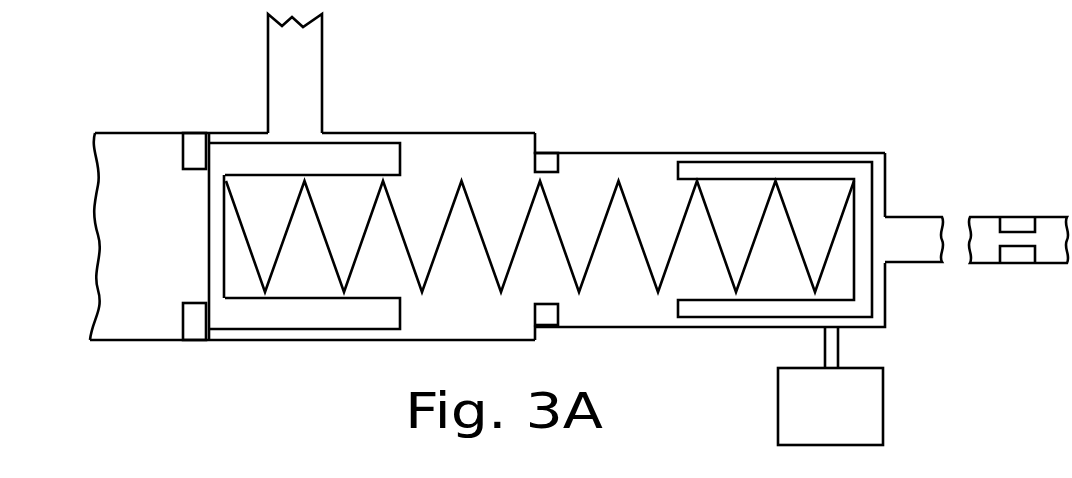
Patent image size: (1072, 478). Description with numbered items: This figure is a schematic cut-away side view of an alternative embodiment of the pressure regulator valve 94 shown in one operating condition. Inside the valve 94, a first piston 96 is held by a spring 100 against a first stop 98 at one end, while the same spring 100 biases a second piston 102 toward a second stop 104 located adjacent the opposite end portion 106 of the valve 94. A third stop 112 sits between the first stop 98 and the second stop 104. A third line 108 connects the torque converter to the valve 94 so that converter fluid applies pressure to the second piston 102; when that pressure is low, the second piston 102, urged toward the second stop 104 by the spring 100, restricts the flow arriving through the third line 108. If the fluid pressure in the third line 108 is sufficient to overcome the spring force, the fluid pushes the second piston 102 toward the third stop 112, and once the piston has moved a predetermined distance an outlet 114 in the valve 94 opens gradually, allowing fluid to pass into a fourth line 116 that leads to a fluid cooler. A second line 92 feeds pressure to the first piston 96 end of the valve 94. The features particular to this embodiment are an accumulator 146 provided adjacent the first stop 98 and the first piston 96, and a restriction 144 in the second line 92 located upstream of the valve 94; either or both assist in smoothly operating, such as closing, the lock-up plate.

The second line 92 is at (916, 225).
The pressure regulator valve 94 is at (679, 74).
The first piston 96 is at (782, 309).
The first stop 98 is at (895, 302).
The spring 100 is at (594, 272).
The second piston 102 is at (293, 313).
The second stop 104 is at (198, 346).
The opposite end portion 106 is at (161, 120).
The third line 108 is at (121, 281).
The third stop 112 is at (546, 157).
The outlet 114 is at (298, 128).
The fourth line 116 is at (302, 56).
The restriction 144 is at (1016, 207).
The accumulator 146 is at (895, 404).